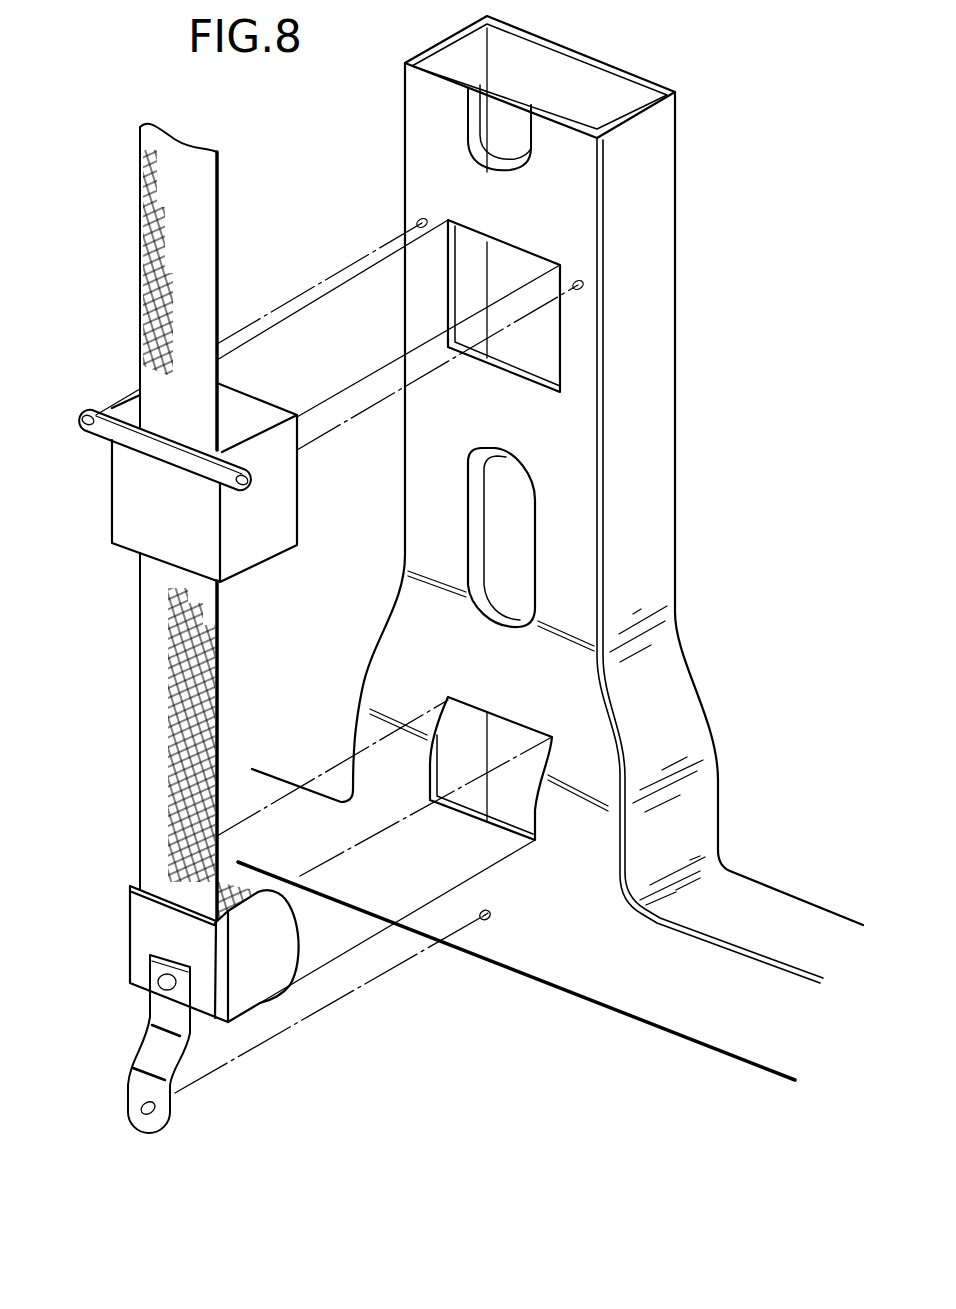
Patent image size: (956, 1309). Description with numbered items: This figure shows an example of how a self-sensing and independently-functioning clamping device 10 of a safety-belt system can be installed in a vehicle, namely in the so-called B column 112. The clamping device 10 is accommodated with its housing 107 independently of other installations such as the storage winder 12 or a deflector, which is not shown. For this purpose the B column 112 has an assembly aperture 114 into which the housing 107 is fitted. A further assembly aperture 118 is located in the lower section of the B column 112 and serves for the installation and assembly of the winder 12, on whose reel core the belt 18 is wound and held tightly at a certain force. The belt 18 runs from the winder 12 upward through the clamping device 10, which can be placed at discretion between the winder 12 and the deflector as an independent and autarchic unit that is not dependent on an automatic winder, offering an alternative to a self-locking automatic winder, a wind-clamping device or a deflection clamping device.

The self-sensing clamping device 10 is at (96, 490).
The storage winder 12 is at (272, 972).
The belt 18 is at (155, 667).
The housing 107 is at (270, 542).
The B column 112 is at (658, 535).
The assembly aperture 114 is at (547, 352).
The assembly aperture 118 is at (522, 810).